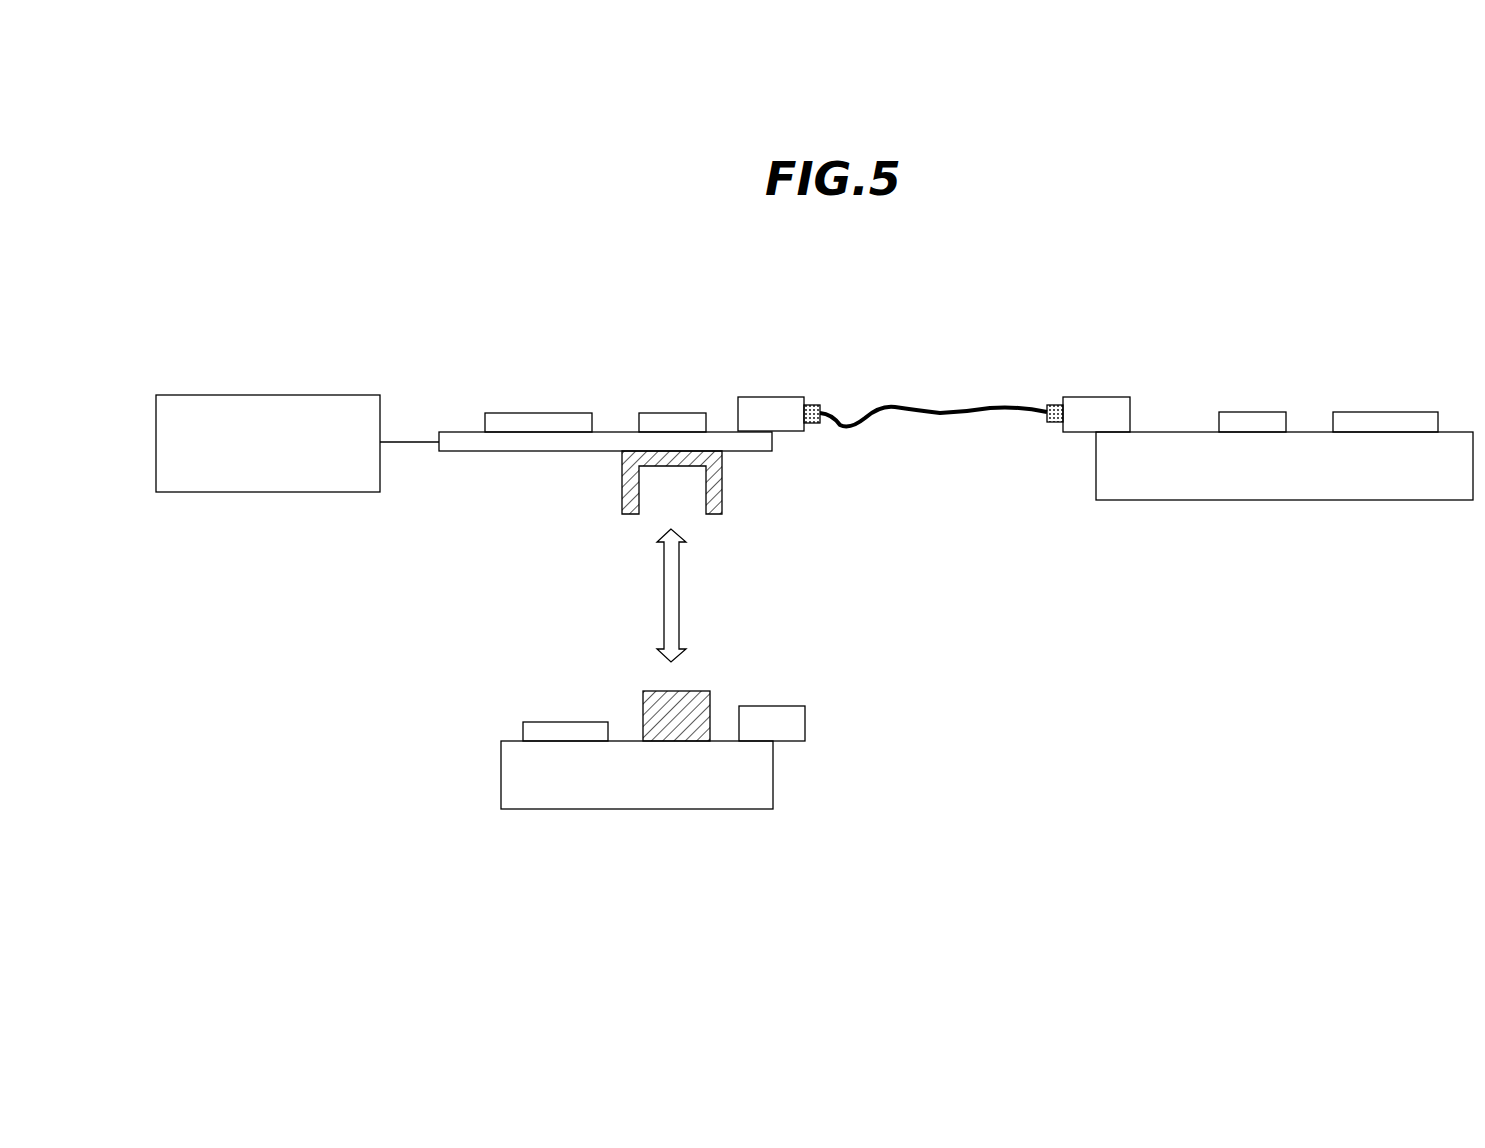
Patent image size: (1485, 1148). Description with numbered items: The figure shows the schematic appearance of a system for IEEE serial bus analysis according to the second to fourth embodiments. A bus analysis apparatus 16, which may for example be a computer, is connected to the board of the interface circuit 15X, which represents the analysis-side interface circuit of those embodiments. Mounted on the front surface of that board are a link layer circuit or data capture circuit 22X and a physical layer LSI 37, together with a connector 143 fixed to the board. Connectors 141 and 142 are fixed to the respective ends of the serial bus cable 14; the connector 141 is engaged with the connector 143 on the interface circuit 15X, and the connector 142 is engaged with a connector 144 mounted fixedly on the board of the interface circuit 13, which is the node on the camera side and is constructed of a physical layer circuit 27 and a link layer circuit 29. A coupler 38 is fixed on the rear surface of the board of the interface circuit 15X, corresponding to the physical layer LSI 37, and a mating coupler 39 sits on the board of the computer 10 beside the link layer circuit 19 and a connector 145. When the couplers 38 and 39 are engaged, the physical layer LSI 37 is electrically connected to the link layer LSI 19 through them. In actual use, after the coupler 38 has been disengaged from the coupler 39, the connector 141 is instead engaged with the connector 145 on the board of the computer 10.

The 1394 bus analysis apparatus 16 is at (267, 395).
The interface circuit 15X is at (520, 453).
The link layer circuit or data capture circuit 22X is at (545, 413).
The physical layer LSI 37 is at (670, 413).
The coupler 38 is at (722, 478).
The connector 143 is at (770, 397).
The connector 141 is at (812, 423).
The IEEE 1394 serial bus 14 is at (945, 415).
The connector 142 is at (1055, 422).
The connector 144 is at (1097, 397).
The 1394 bus interface circuit (node) 13 is at (1283, 502).
The physical layer circuit 27 is at (1252, 412).
The link layer circuit 29 is at (1385, 412).
The computer 10 is at (637, 812).
The link layer circuit 19 is at (565, 722).
The coupler 39 is at (697, 691).
The connector 145 is at (772, 706).